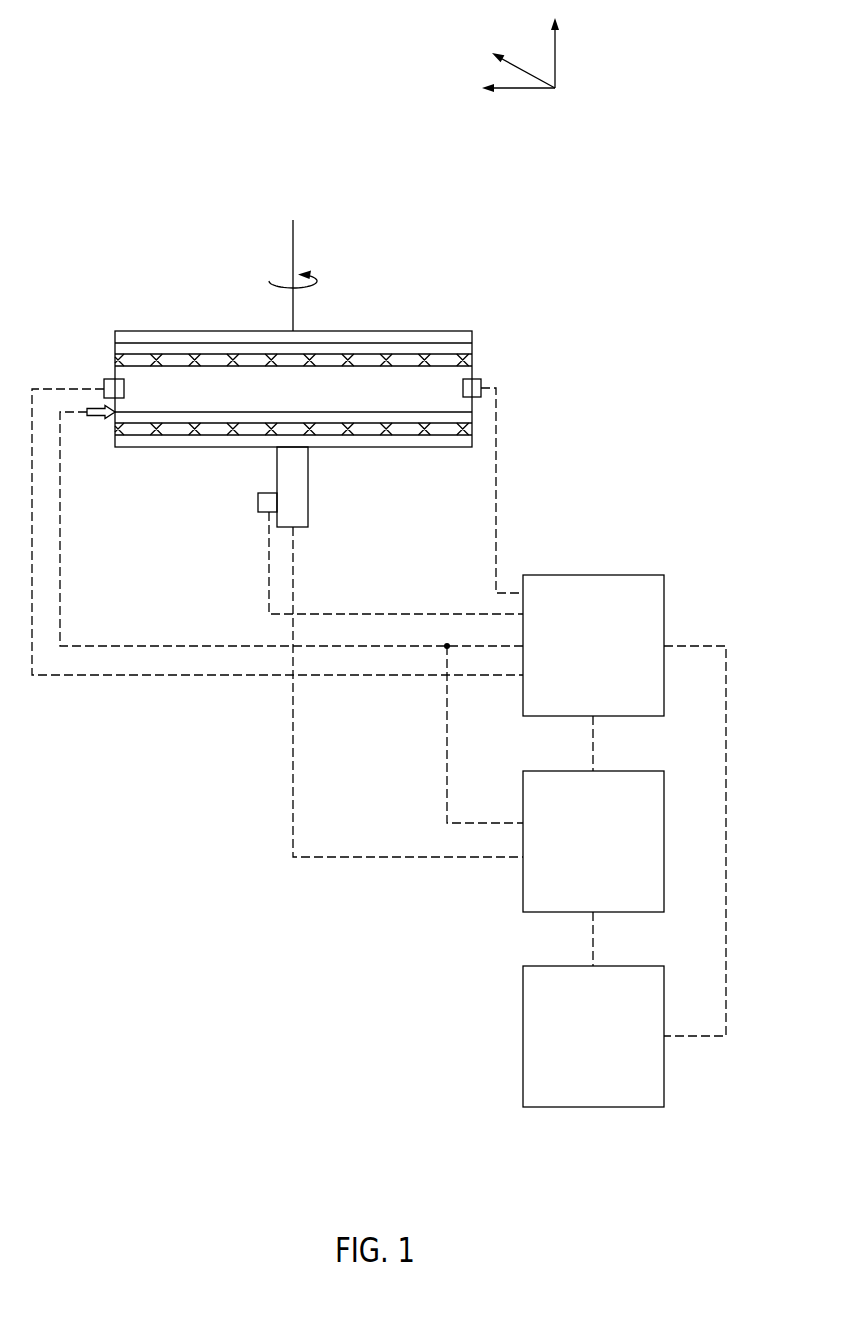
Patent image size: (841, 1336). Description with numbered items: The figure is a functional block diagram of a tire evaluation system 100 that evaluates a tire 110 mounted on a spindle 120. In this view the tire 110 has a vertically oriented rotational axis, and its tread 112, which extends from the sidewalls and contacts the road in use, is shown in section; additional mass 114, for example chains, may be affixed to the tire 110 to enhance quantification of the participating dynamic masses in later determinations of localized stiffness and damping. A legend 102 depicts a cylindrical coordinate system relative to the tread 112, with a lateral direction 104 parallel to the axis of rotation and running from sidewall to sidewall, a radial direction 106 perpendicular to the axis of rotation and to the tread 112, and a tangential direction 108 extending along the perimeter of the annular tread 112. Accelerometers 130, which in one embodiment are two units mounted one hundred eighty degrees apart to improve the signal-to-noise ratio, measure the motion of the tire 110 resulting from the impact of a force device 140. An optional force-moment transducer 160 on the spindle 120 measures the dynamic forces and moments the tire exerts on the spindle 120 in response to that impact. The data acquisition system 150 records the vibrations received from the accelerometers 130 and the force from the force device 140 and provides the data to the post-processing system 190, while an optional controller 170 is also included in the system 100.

The tire evaluation system 100 is at (626, 226).
The legend 102 is at (587, 83).
The lateral direction 104 is at (556, 52).
The radial direction 106 is at (518, 90).
The tangential direction 108 is at (512, 58).
The tire 110 is at (287, 333).
The tread 112 is at (396, 342).
The additional mass 114 is at (357, 367).
The spindle 120 is at (309, 487).
The accelerometers 130 is at (106, 378).
The force device 140 is at (101, 420).
The data acquisition system 150 is at (620, 575).
The force-moment transducer 160 is at (257, 501).
The controller 170 is at (620, 771).
The post-processing system 190 is at (620, 966).